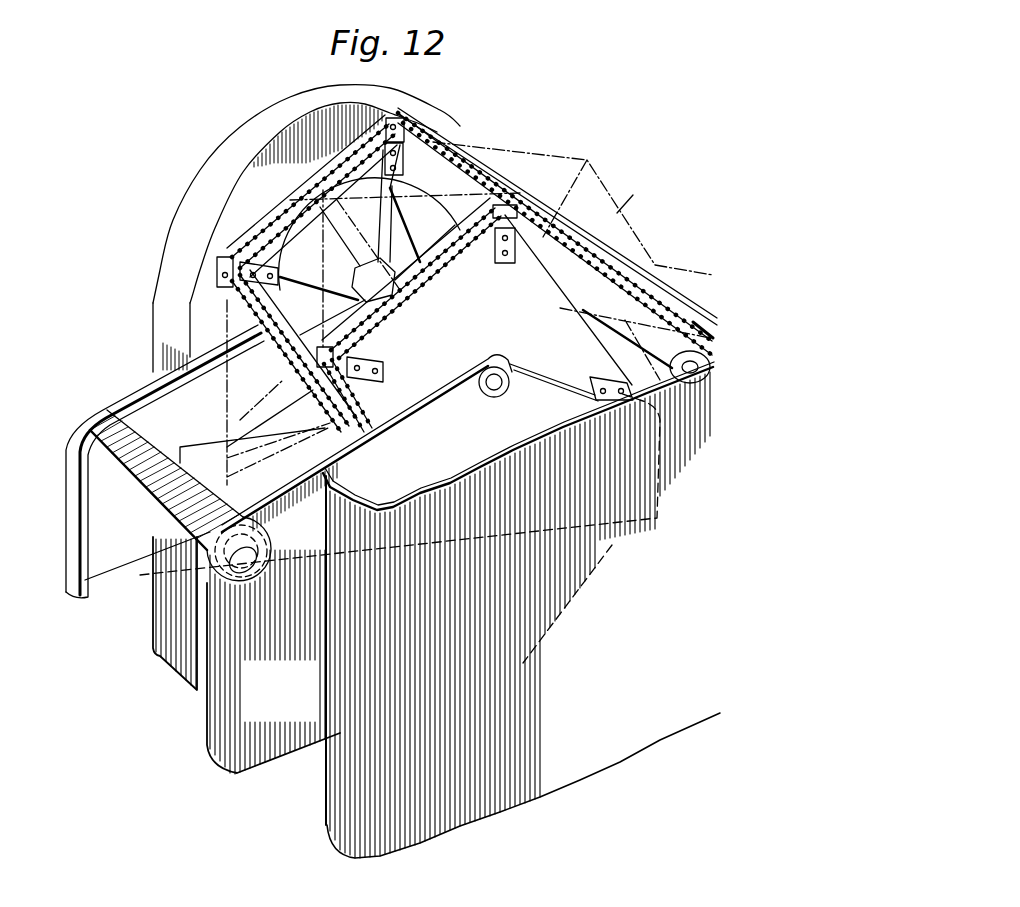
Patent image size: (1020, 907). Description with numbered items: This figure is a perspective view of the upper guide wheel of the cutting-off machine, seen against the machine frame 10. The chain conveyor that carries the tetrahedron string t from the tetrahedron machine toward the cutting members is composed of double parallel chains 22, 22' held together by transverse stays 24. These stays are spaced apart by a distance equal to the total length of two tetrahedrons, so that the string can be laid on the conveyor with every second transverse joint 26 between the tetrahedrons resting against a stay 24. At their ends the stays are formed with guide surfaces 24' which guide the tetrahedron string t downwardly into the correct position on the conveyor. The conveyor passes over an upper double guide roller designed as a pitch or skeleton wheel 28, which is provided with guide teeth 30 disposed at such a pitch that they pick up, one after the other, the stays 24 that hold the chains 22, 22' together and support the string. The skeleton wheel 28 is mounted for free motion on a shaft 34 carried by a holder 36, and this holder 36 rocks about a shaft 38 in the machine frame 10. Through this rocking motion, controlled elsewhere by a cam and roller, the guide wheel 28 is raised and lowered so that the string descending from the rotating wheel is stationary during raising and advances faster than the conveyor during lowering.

The machine frame 10 is at (207, 152).
The chain 22 is at (472, 263).
The chain 22' is at (417, 318).
The transverse stay 24 is at (411, 265).
The guide surface 24' is at (277, 181).
The transverse joint 26 is at (587, 170).
The tetrahedron string t is at (653, 205).
The pitch or skeleton wheel 28 is at (430, 372).
The guide tooth 30 is at (640, 380).
The shaft 34 is at (490, 373).
The holder 36 is at (197, 388).
The shaft 38 is at (157, 574).